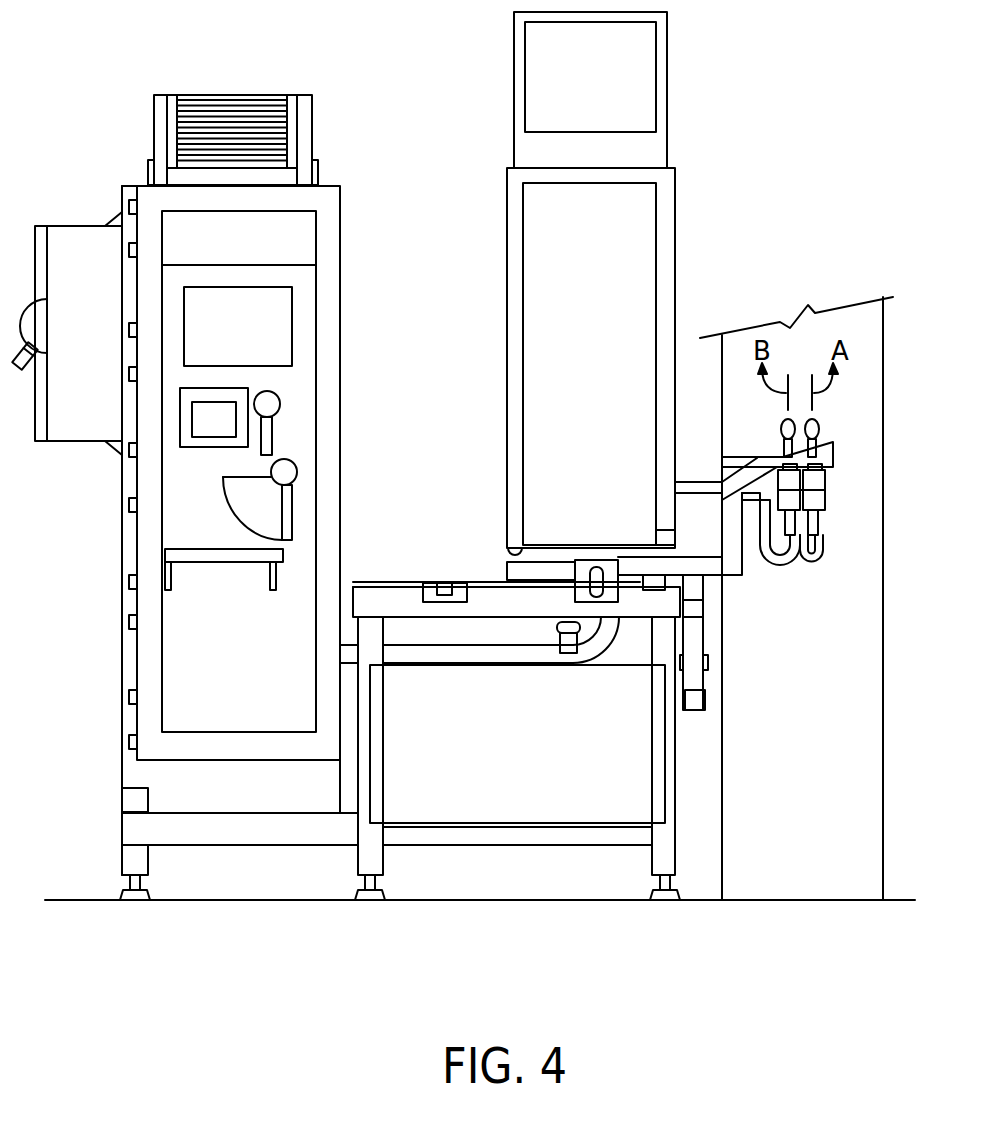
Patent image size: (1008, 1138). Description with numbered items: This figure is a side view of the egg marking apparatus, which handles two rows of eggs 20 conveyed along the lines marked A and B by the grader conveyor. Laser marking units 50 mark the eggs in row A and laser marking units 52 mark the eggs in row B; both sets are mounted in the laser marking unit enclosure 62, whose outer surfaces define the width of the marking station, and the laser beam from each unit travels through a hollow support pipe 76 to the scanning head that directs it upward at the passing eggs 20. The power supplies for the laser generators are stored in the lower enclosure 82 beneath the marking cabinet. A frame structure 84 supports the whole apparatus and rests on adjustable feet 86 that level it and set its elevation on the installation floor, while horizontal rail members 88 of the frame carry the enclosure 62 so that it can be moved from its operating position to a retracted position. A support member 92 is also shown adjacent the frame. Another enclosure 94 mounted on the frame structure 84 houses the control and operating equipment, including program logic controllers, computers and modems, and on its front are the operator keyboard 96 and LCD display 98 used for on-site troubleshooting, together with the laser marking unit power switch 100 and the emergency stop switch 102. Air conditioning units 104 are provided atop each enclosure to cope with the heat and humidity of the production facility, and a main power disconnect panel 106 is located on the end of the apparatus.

The eggs 20 is at (791, 428).
The laser marking units 50 is at (838, 493).
The laser marking units 52 is at (760, 479).
The laser marking unit enclosure 62 is at (615, 267).
The hollow support pipe 76 is at (699, 487).
The lower enclosure 82 is at (512, 790).
The frame structure 84 is at (213, 846).
The adjustable feet 86 is at (128, 893).
The horizontal rail members 88 is at (482, 580).
The support column 92 is at (706, 630).
The enclosure 94 is at (327, 500).
The operator keyboard 96 is at (193, 553).
The LCD display 98 is at (270, 322).
The laser marking unit power switch 100 is at (285, 474).
The emergency stop switch 102 is at (268, 404).
The air conditioning units 104 is at (213, 118).
The main power disconnect panel 106 is at (74, 412).